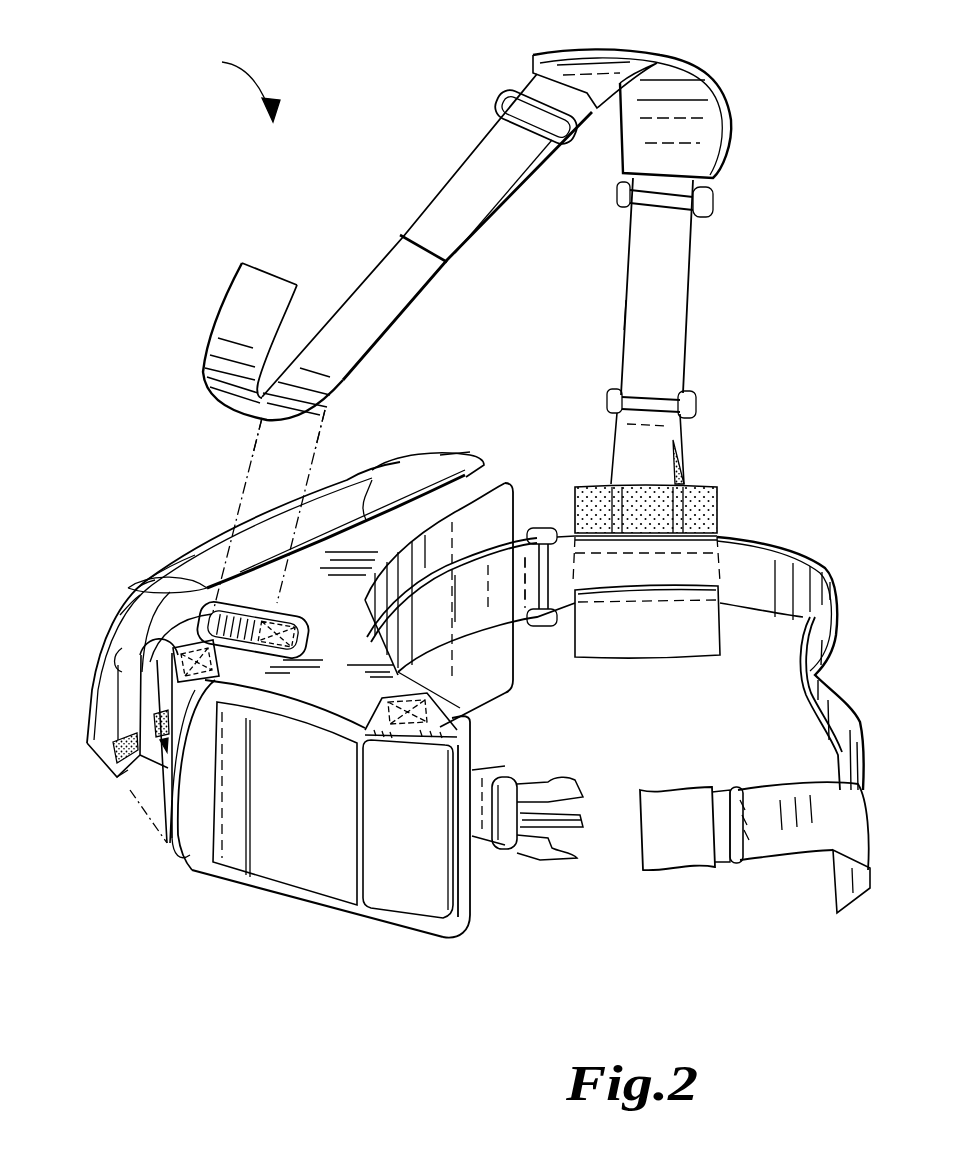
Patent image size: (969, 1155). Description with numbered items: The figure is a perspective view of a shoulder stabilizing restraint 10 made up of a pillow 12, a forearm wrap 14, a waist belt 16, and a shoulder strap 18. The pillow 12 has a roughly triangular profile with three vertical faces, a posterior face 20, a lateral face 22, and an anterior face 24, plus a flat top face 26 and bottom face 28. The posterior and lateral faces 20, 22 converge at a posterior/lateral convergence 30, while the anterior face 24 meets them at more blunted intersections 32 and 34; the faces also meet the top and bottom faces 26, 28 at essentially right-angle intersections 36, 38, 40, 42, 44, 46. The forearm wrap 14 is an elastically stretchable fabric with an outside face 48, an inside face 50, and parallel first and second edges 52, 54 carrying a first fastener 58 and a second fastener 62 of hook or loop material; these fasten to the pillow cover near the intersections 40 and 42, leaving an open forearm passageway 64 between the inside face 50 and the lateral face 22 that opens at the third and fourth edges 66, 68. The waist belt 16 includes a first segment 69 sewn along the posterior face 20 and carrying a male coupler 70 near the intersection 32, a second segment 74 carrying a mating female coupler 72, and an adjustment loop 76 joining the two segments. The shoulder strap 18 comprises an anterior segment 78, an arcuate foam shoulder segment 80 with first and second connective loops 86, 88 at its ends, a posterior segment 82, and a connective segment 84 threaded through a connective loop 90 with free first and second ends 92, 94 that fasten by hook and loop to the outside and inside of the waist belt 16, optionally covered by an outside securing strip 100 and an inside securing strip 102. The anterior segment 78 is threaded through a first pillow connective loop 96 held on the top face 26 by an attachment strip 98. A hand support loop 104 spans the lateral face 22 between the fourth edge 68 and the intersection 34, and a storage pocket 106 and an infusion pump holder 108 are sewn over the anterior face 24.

The shoulder stabilizing restraint 10 is at (230, 86).
The pillow 12 is at (460, 897).
The forearm wrap 14 is at (253, 537).
The waist belt 16 is at (763, 557).
The shoulder strap 18 is at (670, 282).
The posterior face 20 is at (480, 665).
The lateral face 22 is at (457, 462).
The anterior face 24 is at (188, 877).
The top face 26 is at (180, 862).
The bottom face 28 is at (230, 888).
The posterior/lateral convergence 30 is at (513, 485).
The intersection 32 is at (472, 870).
The intersection 34 is at (167, 797).
The intersection 36 is at (457, 512).
The intersection 38 is at (473, 733).
The intersection 40 is at (365, 513).
The intersection 42 is at (167, 843).
The intersection 44 is at (357, 727).
The intersection 46 is at (292, 905).
The outside face 48 is at (190, 577).
The inside face 50 is at (112, 674).
The first edge 52 is at (328, 442).
The second edge 54 is at (120, 783).
The first fastener 58 is at (150, 590).
The second fastener 62 is at (98, 750).
The forearm passageway 64 is at (153, 628).
The third edge 66 is at (453, 478).
The fourth edge 68 is at (118, 660).
The first segment 69 is at (512, 777).
The male coupler 70 is at (552, 860).
The female coupler 72 is at (672, 870).
The second segment 74 is at (790, 835).
The adjustment loop 76 is at (543, 625).
The anterior segment 78 is at (405, 260).
The shoulder segment 80 is at (635, 52).
The posterior segment 82 is at (668, 335).
The connective segment 84 is at (682, 438).
The first connective loop 86 is at (522, 95).
The second connective loop 88 is at (684, 185).
The connective loop 90 is at (623, 442).
The first end 92 is at (682, 470).
The second end 94 is at (617, 472).
The first pillow connective loop 96 is at (270, 612).
The attachment strip 98 is at (309, 623).
The outside securing strip 100 is at (710, 497).
The inside securing strip 102 is at (710, 628).
The hand support loop 104 is at (147, 713).
The storage pocket 106 is at (310, 733).
The infusion pump holder 108 is at (405, 880).